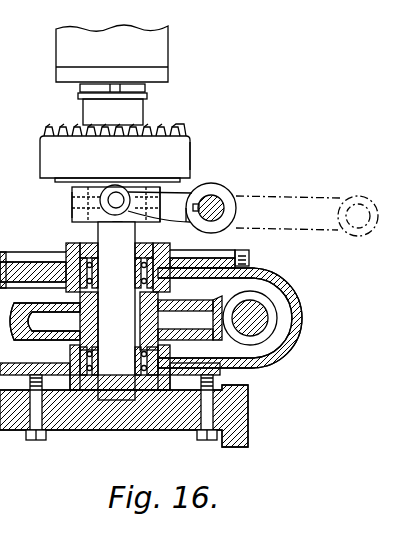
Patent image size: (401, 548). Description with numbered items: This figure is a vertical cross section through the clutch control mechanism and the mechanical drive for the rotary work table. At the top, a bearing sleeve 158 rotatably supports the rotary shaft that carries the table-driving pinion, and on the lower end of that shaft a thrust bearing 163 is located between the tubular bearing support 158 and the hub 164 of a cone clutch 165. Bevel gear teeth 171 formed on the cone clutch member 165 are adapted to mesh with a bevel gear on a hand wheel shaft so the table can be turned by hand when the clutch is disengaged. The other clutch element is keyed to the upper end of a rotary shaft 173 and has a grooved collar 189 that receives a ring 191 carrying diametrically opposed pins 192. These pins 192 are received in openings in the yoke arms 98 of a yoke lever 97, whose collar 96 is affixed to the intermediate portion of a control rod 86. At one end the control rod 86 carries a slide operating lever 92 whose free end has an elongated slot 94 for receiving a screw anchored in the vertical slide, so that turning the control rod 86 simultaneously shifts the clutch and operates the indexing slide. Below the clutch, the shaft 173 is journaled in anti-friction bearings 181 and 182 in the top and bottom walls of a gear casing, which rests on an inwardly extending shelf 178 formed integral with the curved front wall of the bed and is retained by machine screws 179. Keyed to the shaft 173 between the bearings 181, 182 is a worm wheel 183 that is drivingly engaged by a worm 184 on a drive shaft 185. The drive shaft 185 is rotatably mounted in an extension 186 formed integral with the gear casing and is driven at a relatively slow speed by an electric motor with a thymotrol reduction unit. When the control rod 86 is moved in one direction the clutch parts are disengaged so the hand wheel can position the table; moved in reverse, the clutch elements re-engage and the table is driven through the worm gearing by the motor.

The bearing sleeve 158 is at (169, 46).
The thrust bearing 163 is at (78, 89).
The hub 164 is at (95, 108).
The bevel gear teeth 171 is at (174, 125).
The cone clutch 165 is at (176, 146).
The collar 189 is at (74, 216).
The ring 191 is at (72, 198).
The pins 192 is at (116, 193).
The control rod 86 is at (224, 216).
The collar 96 is at (216, 185).
The slide operating lever 92 is at (293, 193).
The elongated slot 94 is at (360, 196).
The yoke arms 98 is at (170, 212).
The yoke lever 97 is at (186, 212).
The rotary shaft 173 is at (116, 311).
The anti-friction bearing 181 is at (92, 256).
The anti-friction bearing 182 is at (90, 372).
The worm wheel 183 is at (222, 302).
The worm 184 is at (268, 302).
The drive shaft 185 is at (268, 318).
The extension 186 is at (300, 338).
The shelf 178 is at (122, 432).
The machine screws 179 is at (33, 441).